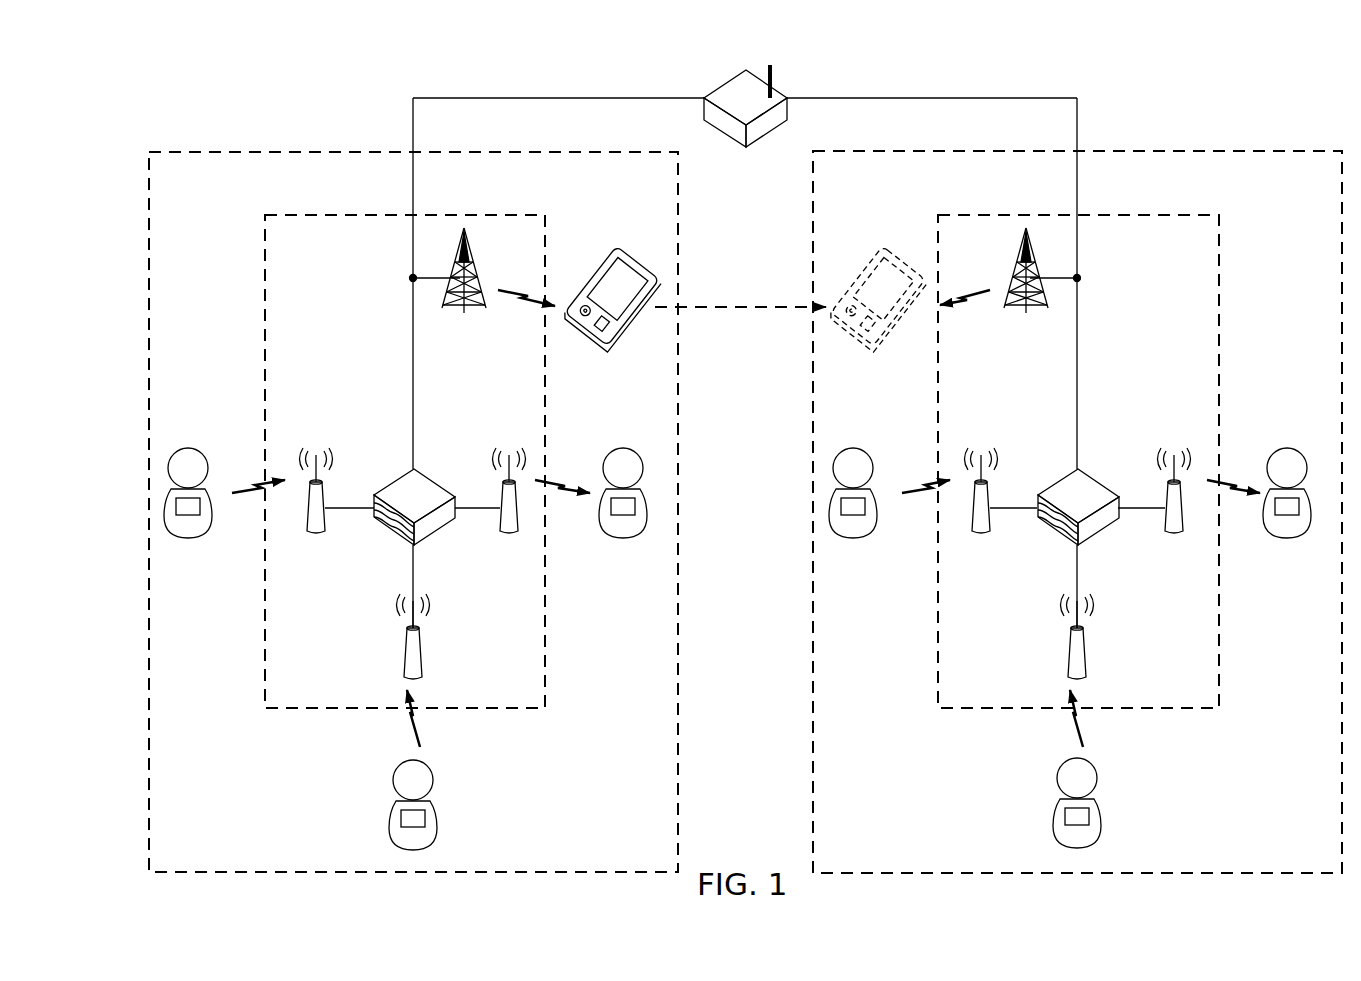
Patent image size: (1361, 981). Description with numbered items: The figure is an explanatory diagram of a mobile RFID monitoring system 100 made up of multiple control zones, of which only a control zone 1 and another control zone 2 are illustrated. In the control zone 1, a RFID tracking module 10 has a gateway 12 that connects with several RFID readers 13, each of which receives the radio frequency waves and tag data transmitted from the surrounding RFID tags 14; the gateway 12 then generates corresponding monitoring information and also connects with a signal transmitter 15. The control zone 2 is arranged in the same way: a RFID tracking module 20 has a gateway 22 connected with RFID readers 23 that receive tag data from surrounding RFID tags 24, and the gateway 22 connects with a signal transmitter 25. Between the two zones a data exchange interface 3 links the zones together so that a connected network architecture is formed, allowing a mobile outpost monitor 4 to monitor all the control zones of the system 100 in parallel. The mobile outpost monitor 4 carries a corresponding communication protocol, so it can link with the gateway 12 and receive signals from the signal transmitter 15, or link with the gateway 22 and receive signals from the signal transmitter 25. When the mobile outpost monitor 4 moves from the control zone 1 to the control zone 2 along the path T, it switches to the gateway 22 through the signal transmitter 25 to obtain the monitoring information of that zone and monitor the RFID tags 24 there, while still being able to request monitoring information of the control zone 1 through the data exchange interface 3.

The mobile RFID monitoring system 100 is at (1147, 90).
The control zone 1 is at (162, 160).
The control zone 2 is at (1319, 160).
The data exchange interface 3 is at (729, 84).
The mobile outpost monitor 4 is at (636, 262).
The RFID tracking module 10 is at (270, 288).
The gateway 12 is at (387, 491).
The RFID reader 13 is at (322, 525).
The RFID tag 14 is at (192, 524).
The signal transmitter 15 is at (470, 260).
The RFID tracking module 20 is at (1210, 262).
The gateway 22 is at (1100, 490).
The RFID reader 23 is at (1170, 525).
The RFID tag 24 is at (1290, 524).
The signal transmitter 25 is at (1018, 262).
The path T is at (737, 310).